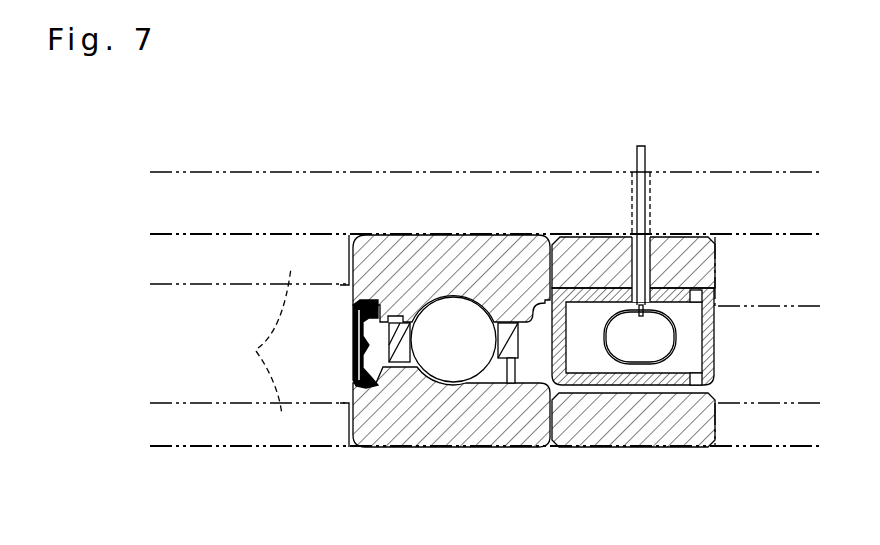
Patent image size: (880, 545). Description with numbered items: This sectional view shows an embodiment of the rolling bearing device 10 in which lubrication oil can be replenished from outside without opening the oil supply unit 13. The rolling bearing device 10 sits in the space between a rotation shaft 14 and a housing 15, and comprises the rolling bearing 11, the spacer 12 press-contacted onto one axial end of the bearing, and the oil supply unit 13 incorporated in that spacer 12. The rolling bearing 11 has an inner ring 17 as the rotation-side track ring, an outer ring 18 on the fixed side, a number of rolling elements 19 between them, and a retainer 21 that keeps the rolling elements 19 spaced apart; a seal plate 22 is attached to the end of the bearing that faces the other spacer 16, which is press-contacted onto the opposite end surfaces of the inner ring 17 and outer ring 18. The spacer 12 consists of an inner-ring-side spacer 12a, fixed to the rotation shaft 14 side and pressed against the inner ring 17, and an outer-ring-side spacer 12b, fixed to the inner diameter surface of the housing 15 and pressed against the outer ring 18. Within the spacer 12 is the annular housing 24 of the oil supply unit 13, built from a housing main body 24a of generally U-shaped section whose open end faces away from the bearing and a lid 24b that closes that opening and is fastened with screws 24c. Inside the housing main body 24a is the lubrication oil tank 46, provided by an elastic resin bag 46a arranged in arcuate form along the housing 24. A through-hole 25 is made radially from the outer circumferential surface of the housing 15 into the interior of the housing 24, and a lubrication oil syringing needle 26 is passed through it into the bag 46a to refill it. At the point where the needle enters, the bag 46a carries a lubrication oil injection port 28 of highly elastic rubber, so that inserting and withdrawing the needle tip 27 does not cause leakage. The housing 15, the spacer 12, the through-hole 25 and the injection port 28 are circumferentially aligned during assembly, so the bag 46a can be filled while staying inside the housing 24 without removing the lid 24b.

The rolling bearing device 10 is at (571, 314).
The rolling bearing 11 is at (431, 347).
The spacer 12 is at (690, 308).
The inner-ring-side spacer 12a is at (575, 415).
The outer-ring-side spacer 12b is at (577, 245).
The oil supply unit 13 is at (722, 320).
The rotation shaft 14 is at (210, 465).
The housing 15 is at (265, 222).
The spacer 16 is at (256, 350).
The inner ring 17 is at (479, 417).
The outer ring 18 is at (478, 245).
The rolling elements 19 is at (438, 310).
The retainer 21 is at (398, 343).
The seal plate 22 is at (352, 352).
The annular housing 24 is at (690, 394).
The housing main body 24a is at (652, 366).
The lid 24b is at (716, 332).
The screws 24c is at (690, 364).
The through-hole 25 is at (633, 233).
The lubrication oil syringing needle 26 is at (645, 197).
The needle tip 27 is at (652, 322).
The lubrication oil injection port 28 is at (648, 315).
The lubrication oil tank 46 is at (717, 418).
The bag 46a is at (688, 383).